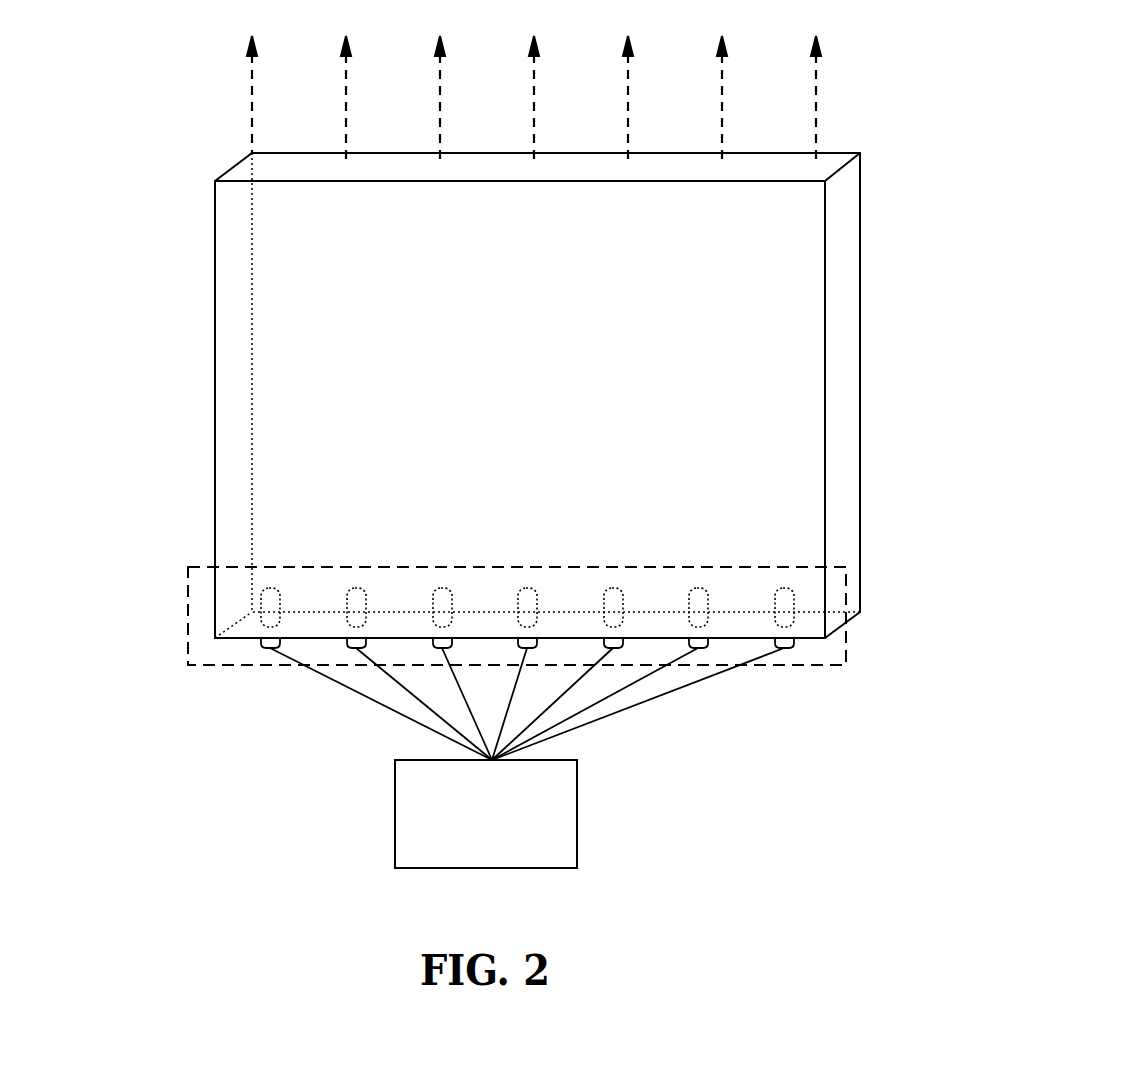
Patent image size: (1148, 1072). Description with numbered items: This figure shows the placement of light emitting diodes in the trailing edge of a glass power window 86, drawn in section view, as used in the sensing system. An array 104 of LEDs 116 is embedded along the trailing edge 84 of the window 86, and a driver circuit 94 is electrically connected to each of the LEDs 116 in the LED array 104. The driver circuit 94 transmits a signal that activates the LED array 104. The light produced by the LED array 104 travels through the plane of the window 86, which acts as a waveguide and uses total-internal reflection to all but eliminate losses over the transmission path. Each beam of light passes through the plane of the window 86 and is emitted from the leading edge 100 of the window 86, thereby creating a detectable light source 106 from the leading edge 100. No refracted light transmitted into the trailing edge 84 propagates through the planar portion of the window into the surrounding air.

The leading edge 100 is at (833, 156).
The power window 86 is at (810, 295).
The detectable light source 106 is at (822, 74).
The LED array 104 is at (835, 598).
The LED 116 is at (272, 593).
The trailing edge 84 is at (778, 652).
The driver circuit 94 is at (558, 808).